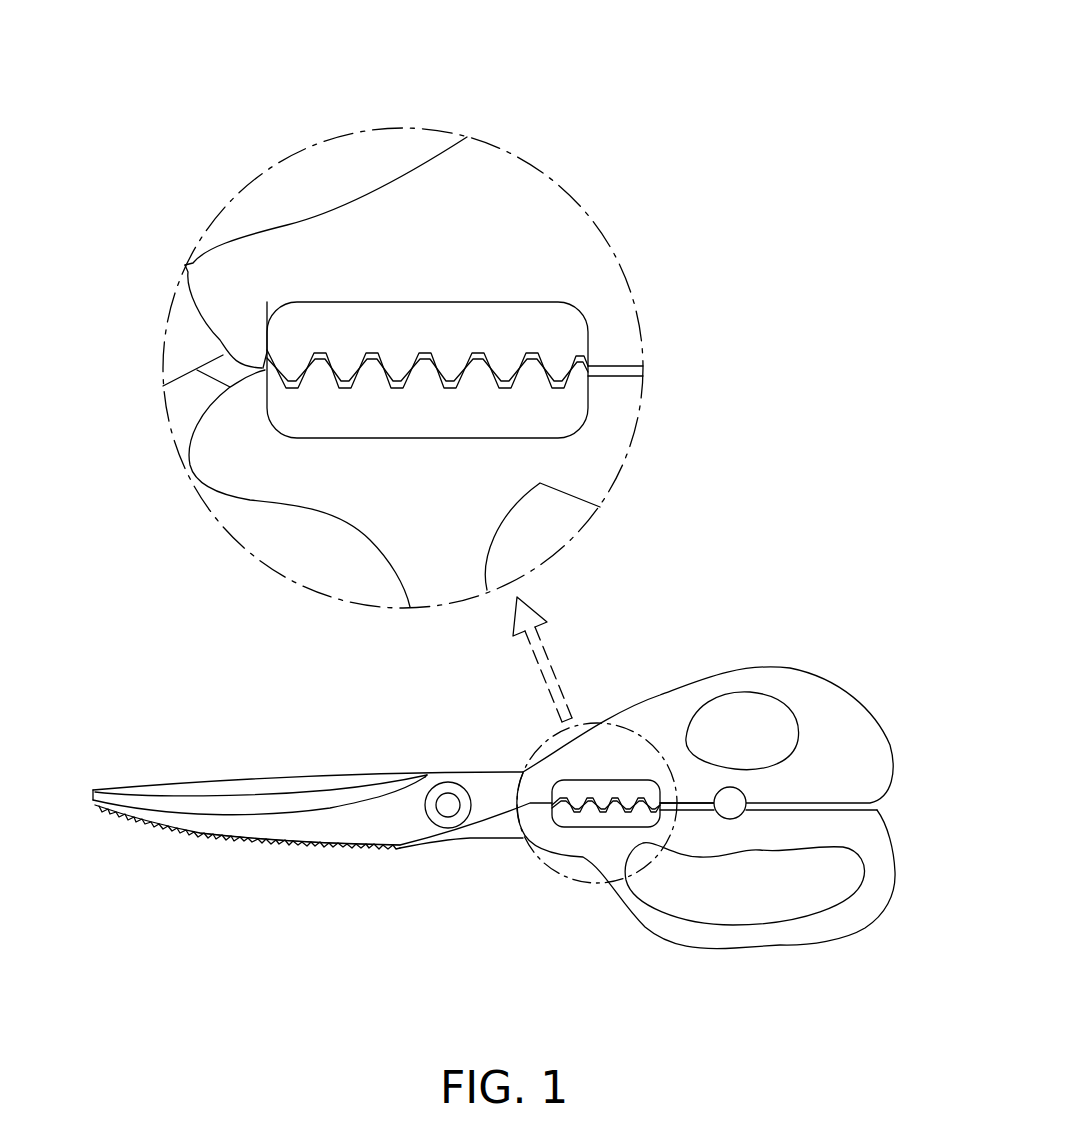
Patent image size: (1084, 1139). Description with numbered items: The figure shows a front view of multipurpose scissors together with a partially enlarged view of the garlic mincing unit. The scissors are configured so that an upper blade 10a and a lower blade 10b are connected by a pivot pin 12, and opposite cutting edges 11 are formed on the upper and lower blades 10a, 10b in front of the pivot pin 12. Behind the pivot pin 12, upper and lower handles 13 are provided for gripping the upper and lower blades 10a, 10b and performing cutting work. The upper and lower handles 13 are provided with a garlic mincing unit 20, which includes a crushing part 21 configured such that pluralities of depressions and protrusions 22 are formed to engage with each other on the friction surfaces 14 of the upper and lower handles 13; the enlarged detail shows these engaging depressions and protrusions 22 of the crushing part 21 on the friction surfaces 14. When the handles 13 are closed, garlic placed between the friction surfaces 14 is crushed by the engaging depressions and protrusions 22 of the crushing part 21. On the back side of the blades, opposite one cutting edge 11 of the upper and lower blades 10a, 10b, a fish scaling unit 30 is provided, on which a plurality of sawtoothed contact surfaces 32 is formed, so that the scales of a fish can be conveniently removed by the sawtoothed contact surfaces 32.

The upper blade 10a is at (308, 785).
The lower blade 10b is at (350, 830).
The cutting edge 11 is at (210, 798).
The pivot pin 12 is at (448, 800).
The upper and lower handles 13 is at (460, 190).
The friction surface 14 is at (590, 366).
The garlic mincing unit 20 is at (518, 270).
The crushing part 21 is at (712, 243).
The depressions and protrusions 22 is at (533, 355).
The fish scaling unit 30 is at (177, 855).
The sawtoothed contact surfaces 32 is at (283, 848).